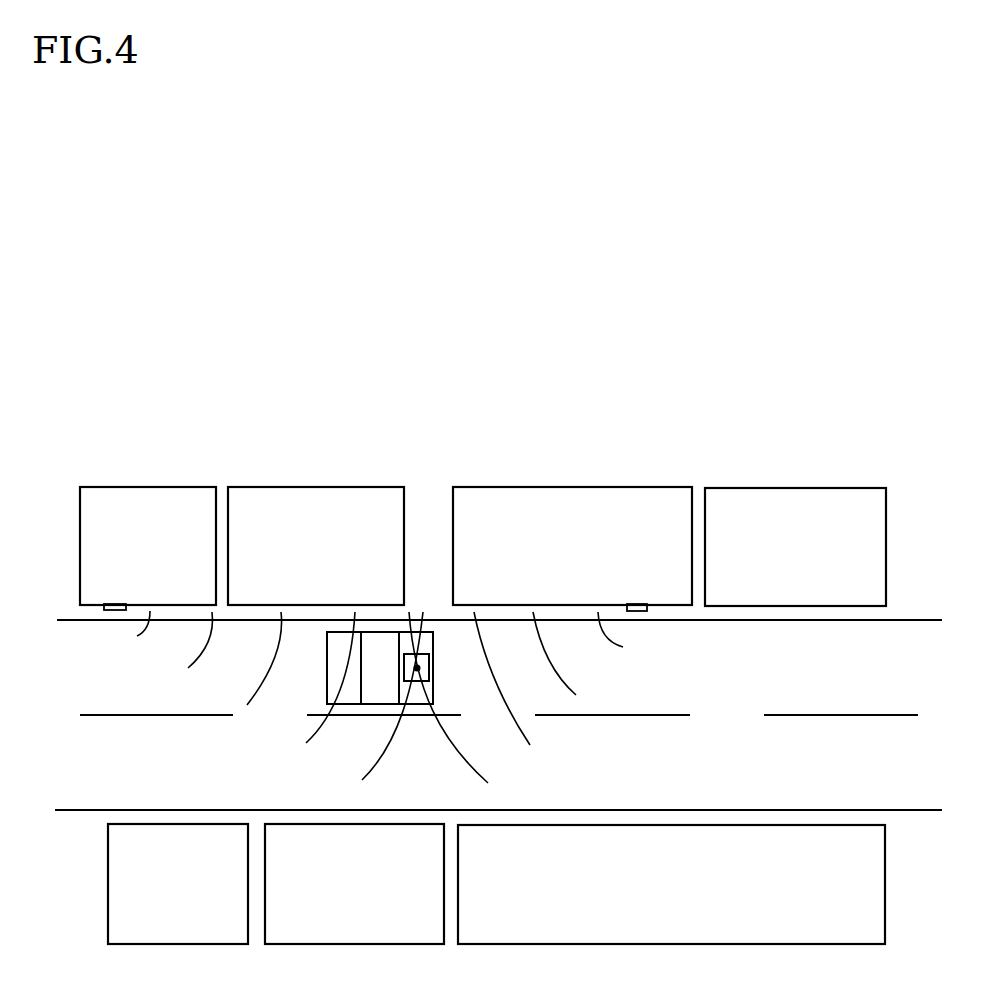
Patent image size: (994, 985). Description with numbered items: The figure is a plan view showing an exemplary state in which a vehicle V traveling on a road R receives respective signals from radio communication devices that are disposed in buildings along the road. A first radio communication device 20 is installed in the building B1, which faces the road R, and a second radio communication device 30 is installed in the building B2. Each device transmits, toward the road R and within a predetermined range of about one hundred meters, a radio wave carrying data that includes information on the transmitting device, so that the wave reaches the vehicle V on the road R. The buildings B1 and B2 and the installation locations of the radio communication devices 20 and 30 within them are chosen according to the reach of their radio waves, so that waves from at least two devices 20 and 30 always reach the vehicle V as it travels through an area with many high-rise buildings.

The building B1 is at (153, 487).
The building B2 is at (583, 487).
The first radio communication device 20 is at (117, 611).
The second radio communication device 30 is at (637, 612).
The vehicle V is at (375, 704).
The road R is at (838, 683).